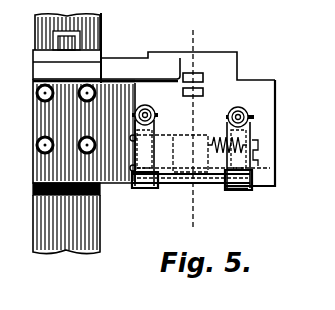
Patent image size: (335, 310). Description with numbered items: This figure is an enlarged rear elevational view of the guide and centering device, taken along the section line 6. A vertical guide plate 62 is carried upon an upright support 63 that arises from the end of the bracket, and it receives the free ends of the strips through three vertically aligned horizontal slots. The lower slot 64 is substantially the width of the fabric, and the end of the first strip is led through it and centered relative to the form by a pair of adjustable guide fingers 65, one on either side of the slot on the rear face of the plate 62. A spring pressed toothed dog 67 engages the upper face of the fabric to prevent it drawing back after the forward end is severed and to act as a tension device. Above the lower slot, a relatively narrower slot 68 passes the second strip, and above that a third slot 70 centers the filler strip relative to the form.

The section line 6- 6 is at (190, 126).
The vertical guide plate 62 is at (276, 143).
The support 63 is at (67, 254).
The lower slot 64 is at (218, 186).
The adjustable guide fingers 65 is at (143, 190).
The spring pressed toothed dog 67 is at (206, 133).
The slot 68 is at (205, 90).
The third slot 70 is at (197, 73).